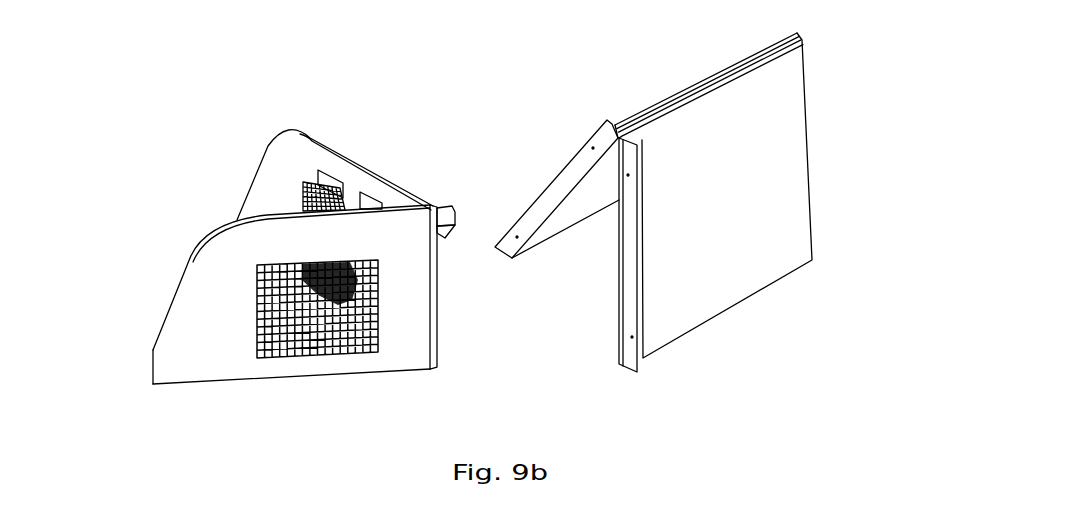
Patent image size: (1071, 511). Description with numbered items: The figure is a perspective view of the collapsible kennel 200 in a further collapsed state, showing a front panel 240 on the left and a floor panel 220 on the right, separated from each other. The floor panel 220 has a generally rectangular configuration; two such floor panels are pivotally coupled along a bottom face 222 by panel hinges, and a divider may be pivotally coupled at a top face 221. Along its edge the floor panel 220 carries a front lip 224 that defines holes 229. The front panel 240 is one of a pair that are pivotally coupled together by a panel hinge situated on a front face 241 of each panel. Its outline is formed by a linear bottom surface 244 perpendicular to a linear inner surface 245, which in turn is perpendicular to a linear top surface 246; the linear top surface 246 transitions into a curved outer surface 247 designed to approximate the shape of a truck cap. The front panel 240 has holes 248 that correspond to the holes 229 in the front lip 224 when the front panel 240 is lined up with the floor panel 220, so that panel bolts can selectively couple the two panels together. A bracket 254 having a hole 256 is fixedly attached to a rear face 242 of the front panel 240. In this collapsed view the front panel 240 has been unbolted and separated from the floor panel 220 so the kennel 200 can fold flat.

The collapsible kennel 200 is at (707, 407).
The floor panel 220 is at (543, 170).
The top face 221 is at (733, 282).
The bottom face 222 is at (565, 225).
The front lip 224 is at (630, 370).
The holes 229 is at (593, 148).
The front panel 240 is at (280, 118).
The front face 241 is at (275, 152).
The rear face 242 is at (233, 365).
The linear bottom surface 244 is at (305, 377).
The linear inner surface 245 is at (433, 327).
The linear top surface 246 is at (397, 210).
The outer surface 247 is at (243, 202).
The holes 248 is at (194, 374).
The bracket 254 is at (441, 238).
The hole 256 is at (450, 216).